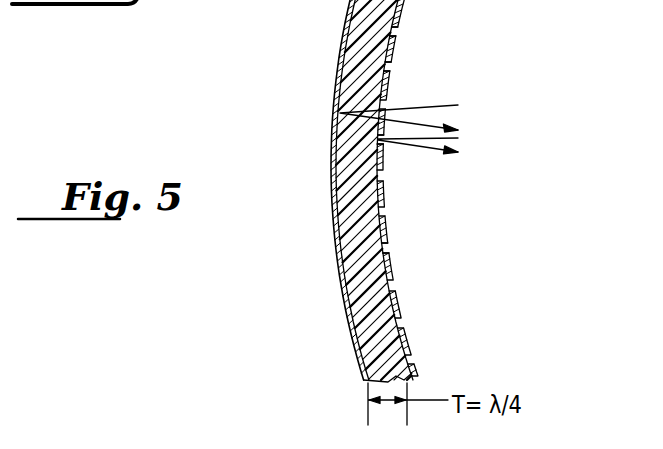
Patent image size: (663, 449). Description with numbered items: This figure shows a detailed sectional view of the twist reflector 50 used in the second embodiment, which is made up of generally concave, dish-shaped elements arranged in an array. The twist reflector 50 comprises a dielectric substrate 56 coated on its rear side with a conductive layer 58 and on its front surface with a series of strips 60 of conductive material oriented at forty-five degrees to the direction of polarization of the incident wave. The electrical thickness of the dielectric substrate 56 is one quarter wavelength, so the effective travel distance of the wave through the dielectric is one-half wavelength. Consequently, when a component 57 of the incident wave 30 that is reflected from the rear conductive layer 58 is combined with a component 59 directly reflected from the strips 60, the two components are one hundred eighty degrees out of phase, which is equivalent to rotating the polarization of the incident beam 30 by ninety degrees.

The incident wave 30 is at (468, 100).
The twist reflector 50 is at (327, 220).
The dielectric substrate 56 is at (347, 158).
The component of the incident wave reflected from the rear conductive layer 57 is at (441, 102).
The conductive layer 58 is at (343, 77).
The component directly reflected from the strips 59 is at (420, 148).
The strips of conductive material 60 is at (395, 30).